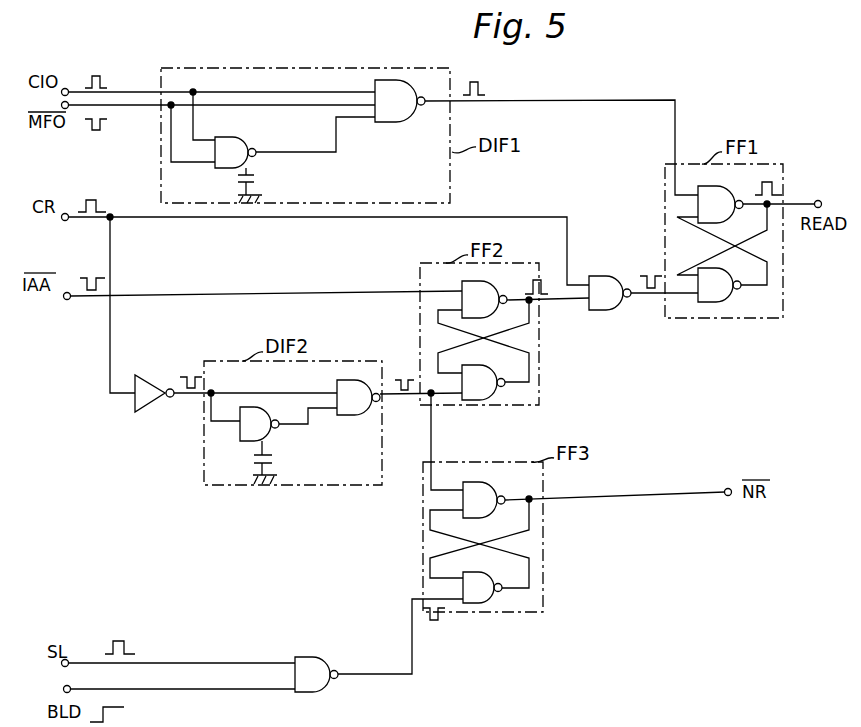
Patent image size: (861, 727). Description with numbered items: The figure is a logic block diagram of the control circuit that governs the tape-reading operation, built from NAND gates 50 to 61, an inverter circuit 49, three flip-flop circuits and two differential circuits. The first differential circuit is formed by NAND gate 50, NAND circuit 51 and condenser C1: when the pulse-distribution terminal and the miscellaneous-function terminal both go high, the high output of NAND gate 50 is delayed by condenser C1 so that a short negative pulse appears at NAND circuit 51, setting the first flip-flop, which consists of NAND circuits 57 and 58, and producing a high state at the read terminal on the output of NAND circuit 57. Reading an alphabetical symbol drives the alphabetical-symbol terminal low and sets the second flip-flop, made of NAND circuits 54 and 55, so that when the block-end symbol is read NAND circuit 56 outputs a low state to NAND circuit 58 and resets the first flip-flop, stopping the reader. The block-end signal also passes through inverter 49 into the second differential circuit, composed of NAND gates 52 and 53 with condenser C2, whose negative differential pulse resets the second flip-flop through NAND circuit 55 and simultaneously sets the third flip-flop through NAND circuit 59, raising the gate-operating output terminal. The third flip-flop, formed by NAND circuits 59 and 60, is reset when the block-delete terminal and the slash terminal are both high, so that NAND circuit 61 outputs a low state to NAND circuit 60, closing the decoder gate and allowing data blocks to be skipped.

The inverter circuit 49 is at (145, 388).
The NAND gate 50 is at (236, 150).
The NAND circuit 51 is at (400, 110).
The NAND gate 52 is at (246, 430).
The NAND gate 53 is at (358, 412).
The NAND circuit 54 is at (488, 293).
The NAND circuit 55 is at (481, 390).
The NAND circuit 56 is at (600, 310).
The NAND circuit 57 is at (718, 205).
The NAND circuit 58 is at (713, 290).
The NAND circuit 59 is at (470, 490).
The NAND circuit 60 is at (478, 605).
The NAND circuit 61 is at (310, 672).
The condenser C1 is at (266, 185).
The condenser C2 is at (281, 462).